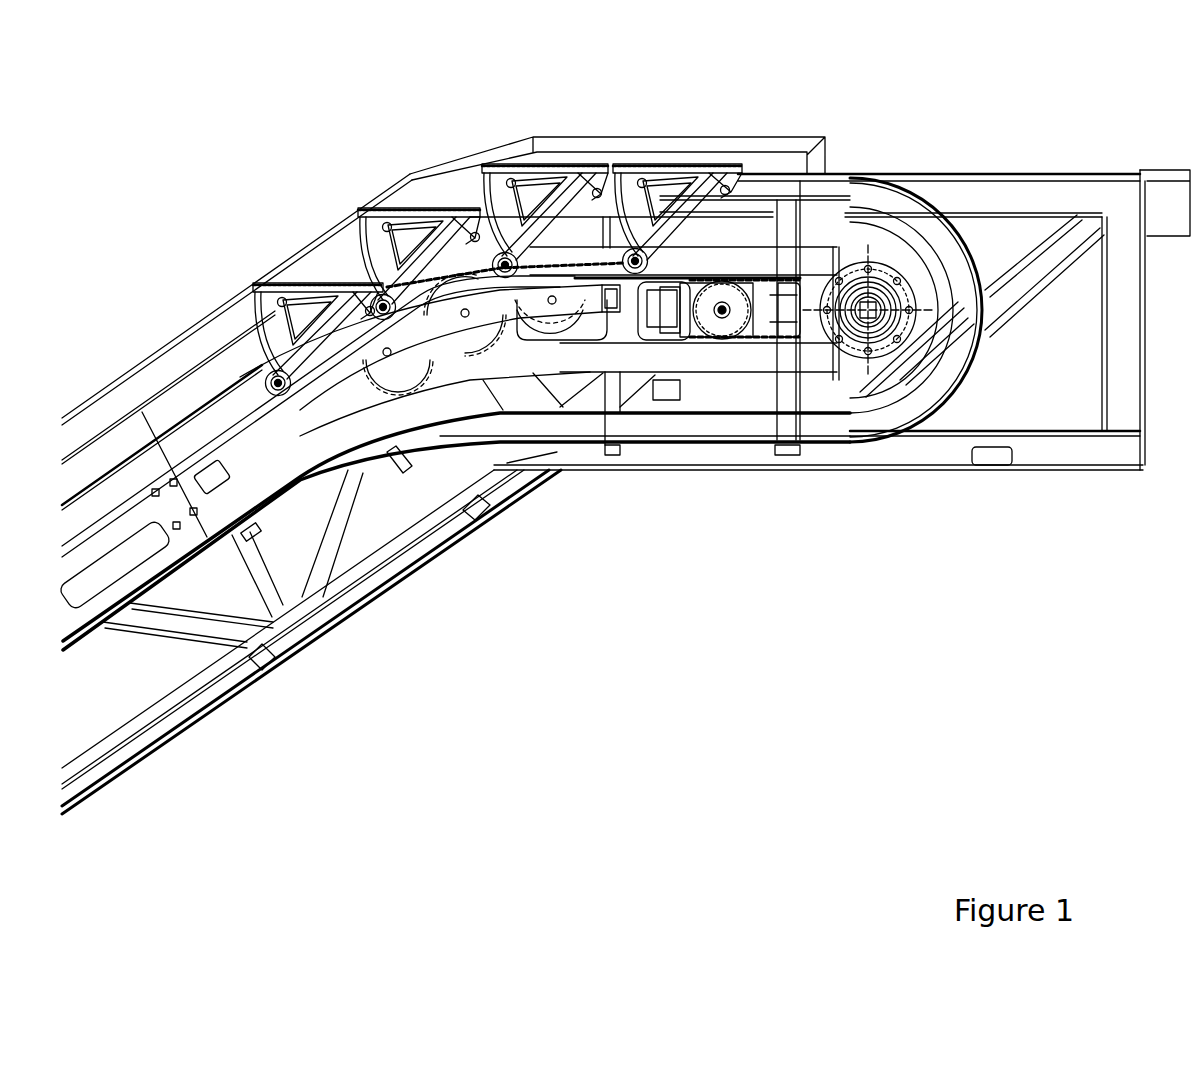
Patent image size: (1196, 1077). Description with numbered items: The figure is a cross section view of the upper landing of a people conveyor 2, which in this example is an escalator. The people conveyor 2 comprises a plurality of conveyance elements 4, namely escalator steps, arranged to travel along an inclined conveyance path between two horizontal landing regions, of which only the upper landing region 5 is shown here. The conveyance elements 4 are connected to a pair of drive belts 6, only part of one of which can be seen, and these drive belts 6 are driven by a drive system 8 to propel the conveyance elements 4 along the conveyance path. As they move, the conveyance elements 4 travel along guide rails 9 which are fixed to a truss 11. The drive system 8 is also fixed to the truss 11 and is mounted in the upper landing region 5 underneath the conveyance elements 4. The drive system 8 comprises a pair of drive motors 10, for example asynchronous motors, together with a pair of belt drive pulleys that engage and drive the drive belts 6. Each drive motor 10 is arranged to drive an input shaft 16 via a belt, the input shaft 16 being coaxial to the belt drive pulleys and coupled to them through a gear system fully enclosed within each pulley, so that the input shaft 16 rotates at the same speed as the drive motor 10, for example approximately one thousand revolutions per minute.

The people conveyor 2 is at (745, 643).
The conveyance elements 4 is at (295, 287).
The upper landing region 5 is at (930, 130).
The drive belts 6 is at (467, 273).
The drive system 8 is at (820, 370).
The guide rails 9 is at (748, 193).
The drive motors 10 is at (722, 325).
The truss 11 is at (1058, 443).
The input shaft 16 is at (870, 308).